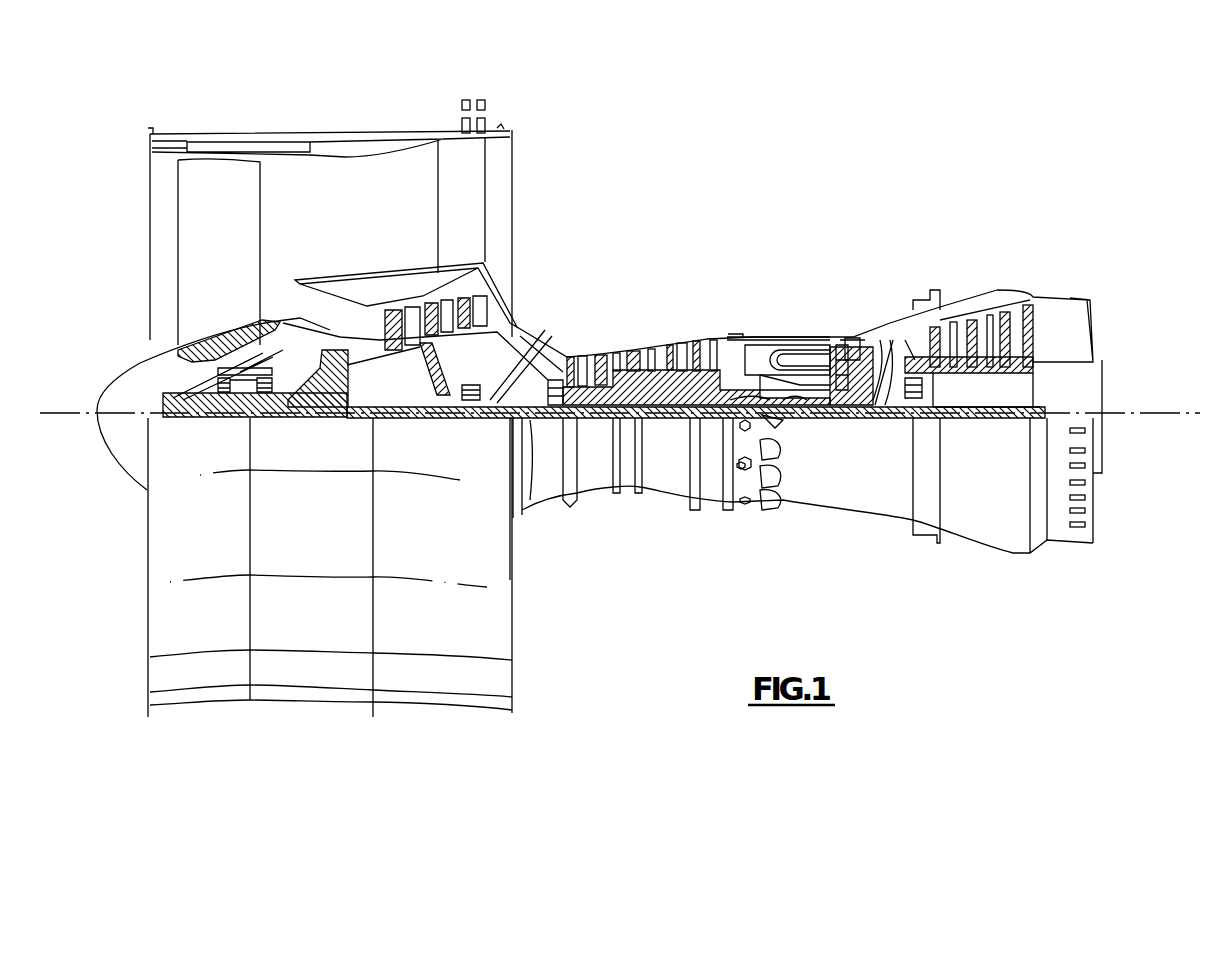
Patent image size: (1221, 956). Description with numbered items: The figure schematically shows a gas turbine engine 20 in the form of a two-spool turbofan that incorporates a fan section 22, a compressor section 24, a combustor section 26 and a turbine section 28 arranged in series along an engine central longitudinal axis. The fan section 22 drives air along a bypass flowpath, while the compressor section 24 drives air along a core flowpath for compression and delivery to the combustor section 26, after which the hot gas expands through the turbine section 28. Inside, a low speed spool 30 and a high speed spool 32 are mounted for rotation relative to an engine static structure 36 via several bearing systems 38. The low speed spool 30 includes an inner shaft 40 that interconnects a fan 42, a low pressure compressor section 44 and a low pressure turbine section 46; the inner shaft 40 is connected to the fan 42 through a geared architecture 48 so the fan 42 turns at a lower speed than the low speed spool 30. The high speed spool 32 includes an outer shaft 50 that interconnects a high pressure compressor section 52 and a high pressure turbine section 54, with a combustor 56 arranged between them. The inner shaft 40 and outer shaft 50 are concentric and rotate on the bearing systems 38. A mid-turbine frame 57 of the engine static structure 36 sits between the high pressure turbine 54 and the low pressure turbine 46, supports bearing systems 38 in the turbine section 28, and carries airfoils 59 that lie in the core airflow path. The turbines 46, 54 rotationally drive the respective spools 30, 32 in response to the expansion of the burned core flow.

The gas turbine engine 20 is at (792, 182).
The fan section 22 is at (262, 128).
The compressor section 24 is at (558, 327).
The combustor section 26 is at (787, 310).
The turbine section 28 is at (932, 278).
The low speed spool 30 is at (670, 420).
The high speed spool 32 is at (708, 386).
The engine static structure 36 is at (710, 503).
The bearing systems 38 is at (247, 382).
The inner shaft 40 is at (533, 420).
The fan 42 is at (235, 263).
The low pressure compressor section 44 is at (447, 320).
The low pressure turbine section 46 is at (977, 307).
The geared architecture 48 is at (337, 402).
The outer shaft 50 is at (790, 402).
The high pressure compressor section 52 is at (641, 374).
The high pressure turbine section 54 is at (853, 337).
The combustor 56 is at (783, 358).
The mid-turbine frame 57 is at (893, 334).
The airfoils 59 is at (907, 363).